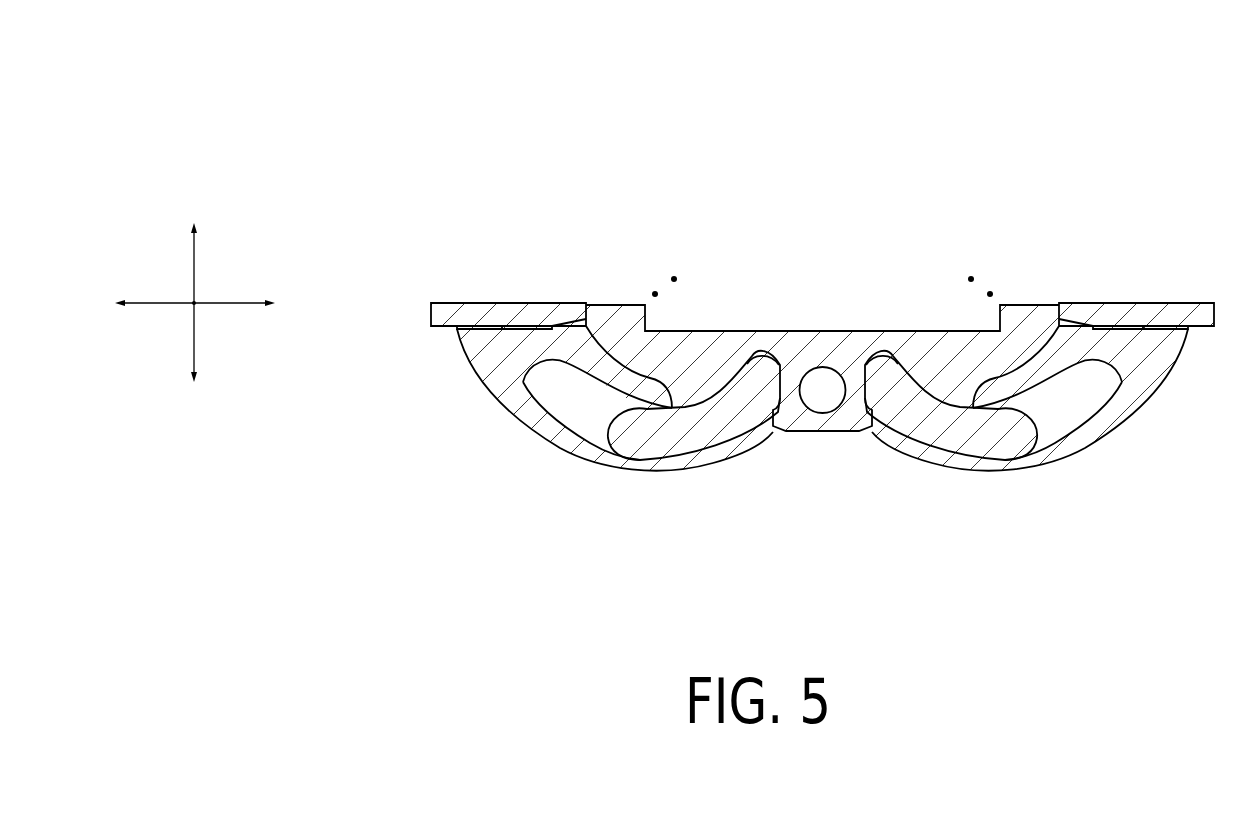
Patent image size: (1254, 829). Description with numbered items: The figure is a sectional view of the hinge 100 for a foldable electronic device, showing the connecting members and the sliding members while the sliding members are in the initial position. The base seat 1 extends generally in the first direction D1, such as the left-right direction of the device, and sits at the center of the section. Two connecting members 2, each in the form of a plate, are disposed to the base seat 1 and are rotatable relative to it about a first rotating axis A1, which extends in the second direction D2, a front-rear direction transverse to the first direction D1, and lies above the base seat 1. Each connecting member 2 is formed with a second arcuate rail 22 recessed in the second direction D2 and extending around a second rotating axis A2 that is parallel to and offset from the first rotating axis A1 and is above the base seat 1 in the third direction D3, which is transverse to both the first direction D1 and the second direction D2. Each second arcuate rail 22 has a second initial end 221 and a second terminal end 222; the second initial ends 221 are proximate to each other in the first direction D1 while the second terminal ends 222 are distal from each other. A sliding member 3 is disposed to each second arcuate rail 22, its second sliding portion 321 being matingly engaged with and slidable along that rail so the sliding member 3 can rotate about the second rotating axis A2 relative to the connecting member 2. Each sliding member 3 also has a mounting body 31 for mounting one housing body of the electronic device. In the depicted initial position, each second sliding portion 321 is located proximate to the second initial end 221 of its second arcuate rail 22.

The hinge 100 is at (372, 73).
The base seat 1 is at (822, 331).
The connecting member 2 is at (533, 432).
The second arcuate rail 22 is at (644, 461).
The second initial end 221 is at (767, 408).
The second terminal end 222 is at (520, 380).
The sliding member 3 is at (822, 460).
The second sliding portion 321 is at (700, 433).
The mounting body 31 is at (505, 312).
The first rotating axis A1 is at (674, 279).
The second rotating axis A2 is at (655, 293).
The first direction D1 is at (214, 303).
The second direction D2 is at (213, 288).
The third direction D3 is at (194, 286).